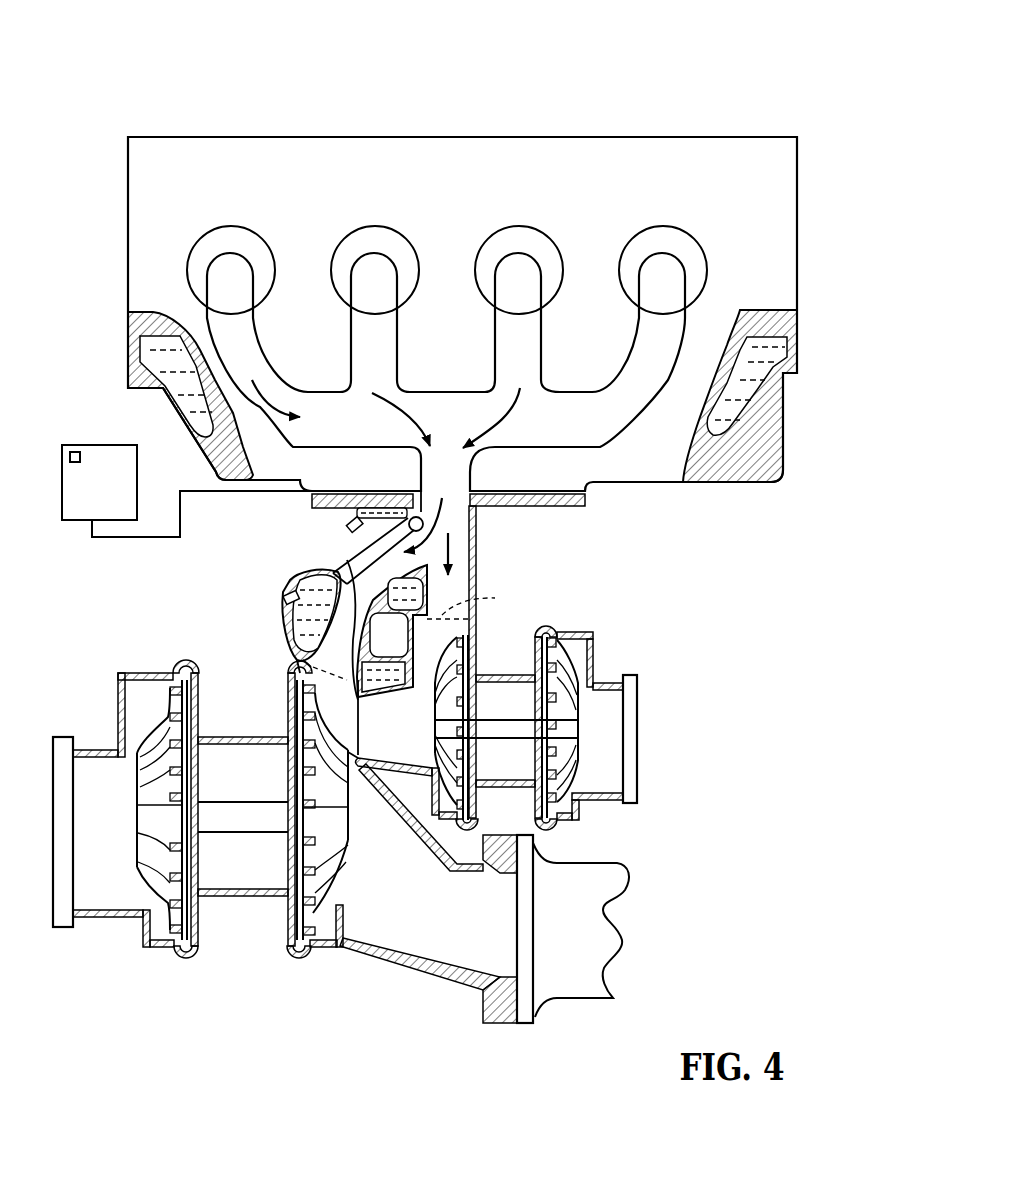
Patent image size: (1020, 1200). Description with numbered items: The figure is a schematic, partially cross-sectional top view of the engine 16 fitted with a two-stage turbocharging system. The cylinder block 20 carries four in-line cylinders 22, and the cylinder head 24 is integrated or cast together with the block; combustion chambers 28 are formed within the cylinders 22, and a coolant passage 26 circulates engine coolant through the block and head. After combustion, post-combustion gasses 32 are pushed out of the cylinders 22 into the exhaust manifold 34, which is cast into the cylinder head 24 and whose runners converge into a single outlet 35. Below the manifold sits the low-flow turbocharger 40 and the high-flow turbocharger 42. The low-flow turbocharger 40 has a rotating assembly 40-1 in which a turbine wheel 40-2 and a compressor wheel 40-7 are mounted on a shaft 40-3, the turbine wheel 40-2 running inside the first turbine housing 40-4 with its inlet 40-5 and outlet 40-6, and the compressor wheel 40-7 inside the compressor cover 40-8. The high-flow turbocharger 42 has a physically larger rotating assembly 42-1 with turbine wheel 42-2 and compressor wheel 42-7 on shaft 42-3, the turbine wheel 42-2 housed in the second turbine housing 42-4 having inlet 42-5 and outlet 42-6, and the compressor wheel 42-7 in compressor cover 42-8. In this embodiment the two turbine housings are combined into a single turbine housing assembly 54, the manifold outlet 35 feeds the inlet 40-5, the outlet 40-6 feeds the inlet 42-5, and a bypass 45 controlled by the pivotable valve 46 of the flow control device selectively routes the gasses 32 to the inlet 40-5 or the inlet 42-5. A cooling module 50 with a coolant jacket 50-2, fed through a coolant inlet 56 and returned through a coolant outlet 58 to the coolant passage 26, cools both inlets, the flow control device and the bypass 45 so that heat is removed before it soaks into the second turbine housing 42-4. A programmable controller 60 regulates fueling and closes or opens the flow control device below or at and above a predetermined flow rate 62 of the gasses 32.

The engine 16 is at (720, 89).
The cylinder block 20 is at (460, 423).
The cylinders 22 is at (448, 230).
The cylinder head 24 is at (786, 167).
The coolant passage 26 is at (152, 353).
The combustion chambers 28 is at (208, 242).
The post-combustion gasses 32 is at (263, 407).
The exhaust manifold 34 is at (646, 468).
The single outlet 35 is at (473, 481).
The low-flow turbocharger 40 is at (521, 758).
The rotating assembly 40-1 is at (490, 703).
The turbine wheel 40-2 is at (438, 779).
The shaft 40-3 is at (483, 733).
The first turbine housing 40-4 is at (491, 600).
The inlet 40-5 is at (458, 592).
The outlet 40-6 is at (408, 749).
The compressor wheel 40-7 is at (625, 738).
The compressor cover 40-8 is at (562, 820).
The high-flow turbocharger 42 is at (270, 812).
The rotating assembly 42-1 is at (233, 872).
The turbine wheel 42-2 is at (362, 820).
The shaft 42-3 is at (221, 820).
The second turbine housing 42-4 is at (317, 950).
The inlet 42-5 is at (333, 650).
The outlet 42-6 is at (422, 940).
The compressor wheel 42-7 is at (163, 750).
The compressor cover 42-8 is at (134, 675).
The bypass 45 is at (373, 578).
The valve 46 is at (353, 552).
The cooling module 50 is at (294, 579).
The coolant jacket 50-2 is at (305, 620).
The turbine housing assembly 54 is at (410, 783).
The coolant inlet 56 is at (348, 524).
The coolant outlet 58 is at (284, 594).
The programmable controller 60 is at (187, 491).
The predetermined flow rate 62 is at (74, 452).